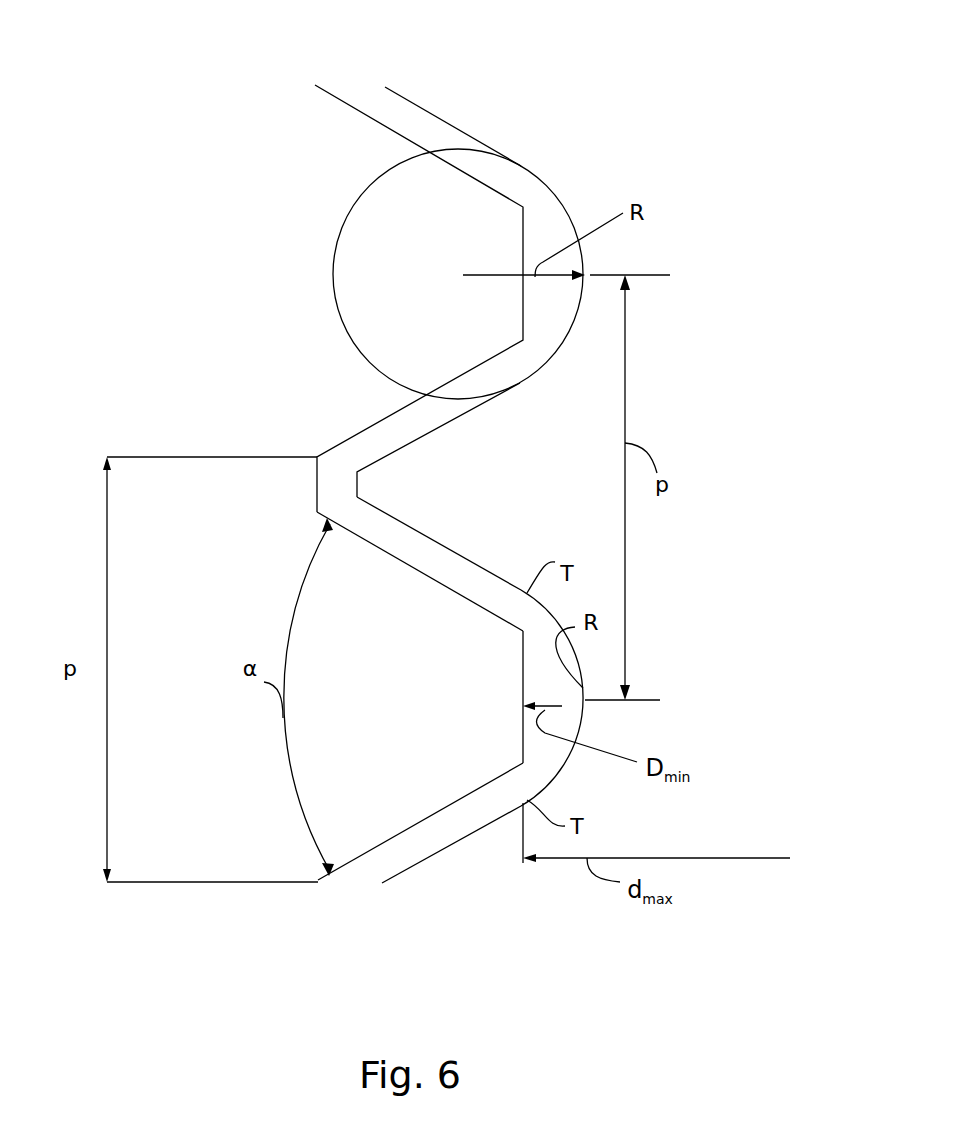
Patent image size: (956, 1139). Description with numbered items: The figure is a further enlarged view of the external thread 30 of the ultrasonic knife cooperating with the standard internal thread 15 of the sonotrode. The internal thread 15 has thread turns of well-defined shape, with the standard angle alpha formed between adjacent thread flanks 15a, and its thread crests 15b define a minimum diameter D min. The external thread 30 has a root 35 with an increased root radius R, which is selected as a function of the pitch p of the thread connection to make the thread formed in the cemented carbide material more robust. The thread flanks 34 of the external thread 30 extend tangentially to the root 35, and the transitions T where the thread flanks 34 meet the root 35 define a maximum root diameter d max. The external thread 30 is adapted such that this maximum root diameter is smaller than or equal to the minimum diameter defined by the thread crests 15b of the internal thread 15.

The internal thread 15 is at (315, 82).
The external thread 30 is at (387, 82).
The thread flanks 34 is at (453, 550).
The root 35 is at (586, 659).
The thread flanks 15a is at (423, 575).
The thread crests 15b is at (527, 742).